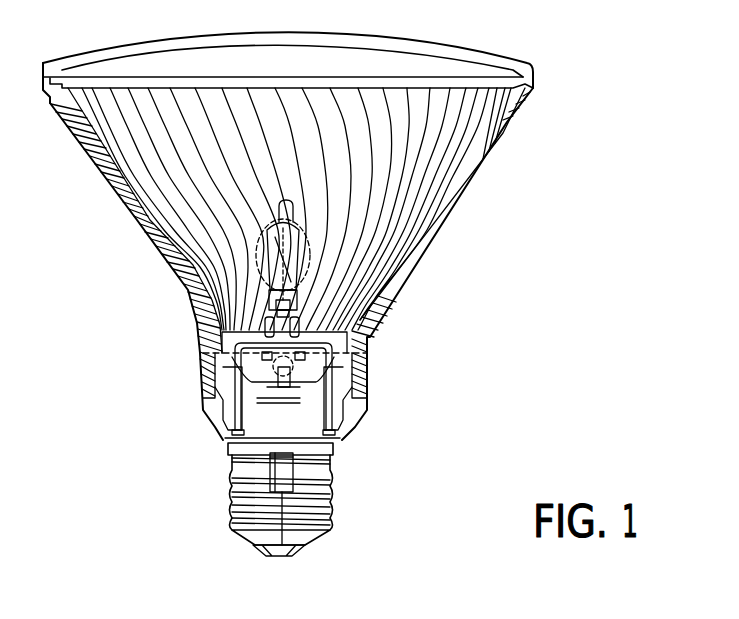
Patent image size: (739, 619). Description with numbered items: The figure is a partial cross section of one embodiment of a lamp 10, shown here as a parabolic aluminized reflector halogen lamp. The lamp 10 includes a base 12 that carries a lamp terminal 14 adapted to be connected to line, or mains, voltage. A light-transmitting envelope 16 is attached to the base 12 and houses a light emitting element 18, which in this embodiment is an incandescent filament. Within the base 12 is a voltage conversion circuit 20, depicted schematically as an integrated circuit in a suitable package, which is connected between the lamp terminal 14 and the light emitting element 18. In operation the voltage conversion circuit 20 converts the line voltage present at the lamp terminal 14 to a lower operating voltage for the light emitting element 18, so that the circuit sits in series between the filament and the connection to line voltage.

The lamp 10 is at (432, 325).
The base 12 is at (226, 473).
The lamp terminal 14 is at (266, 556).
The light-transmitting envelope 16 is at (301, 232).
The light emitting element 18 is at (283, 257).
The voltage conversion circuit 20 is at (284, 468).